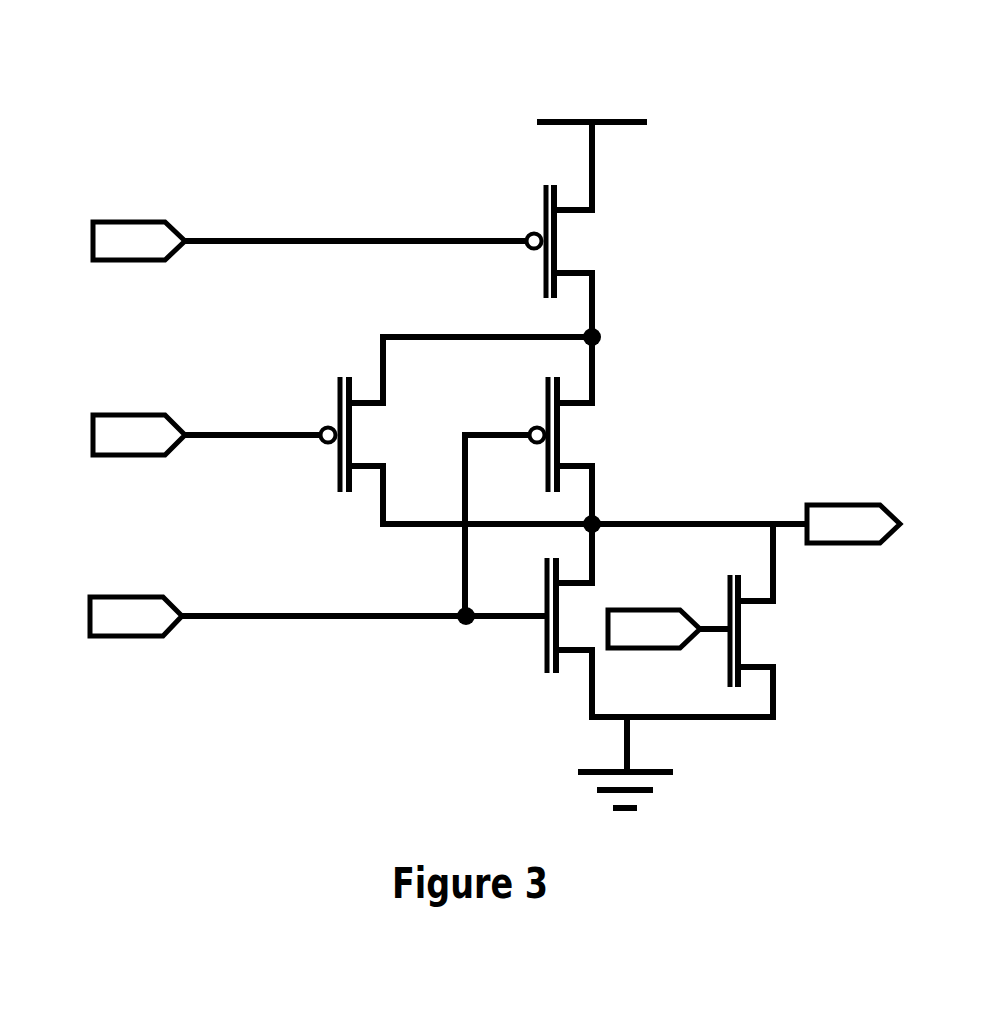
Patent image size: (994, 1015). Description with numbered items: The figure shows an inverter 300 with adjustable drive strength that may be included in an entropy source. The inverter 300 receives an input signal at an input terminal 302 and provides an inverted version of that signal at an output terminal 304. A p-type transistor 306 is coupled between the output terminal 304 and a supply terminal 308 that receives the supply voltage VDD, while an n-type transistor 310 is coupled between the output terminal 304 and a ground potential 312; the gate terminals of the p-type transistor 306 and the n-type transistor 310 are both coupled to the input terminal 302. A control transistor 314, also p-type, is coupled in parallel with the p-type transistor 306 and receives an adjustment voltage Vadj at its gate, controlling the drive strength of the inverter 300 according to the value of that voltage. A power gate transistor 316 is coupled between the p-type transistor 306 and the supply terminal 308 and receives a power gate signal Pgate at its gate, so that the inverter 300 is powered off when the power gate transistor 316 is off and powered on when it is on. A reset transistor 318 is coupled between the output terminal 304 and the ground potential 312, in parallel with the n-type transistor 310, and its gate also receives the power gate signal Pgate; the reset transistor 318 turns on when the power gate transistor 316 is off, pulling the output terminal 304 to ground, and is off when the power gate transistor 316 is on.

The inverter 300 is at (98, 90).
The input terminal 302 is at (107, 615).
The output terminal 304 is at (845, 528).
The p-type transistor 306 is at (558, 447).
The supply terminal 308 is at (545, 118).
The n-type transistor 310 is at (546, 628).
The ground potential 312 is at (633, 793).
The control transistor 314 is at (335, 400).
The power gate transistor 316 is at (540, 210).
The reset transistor 318 is at (745, 628).